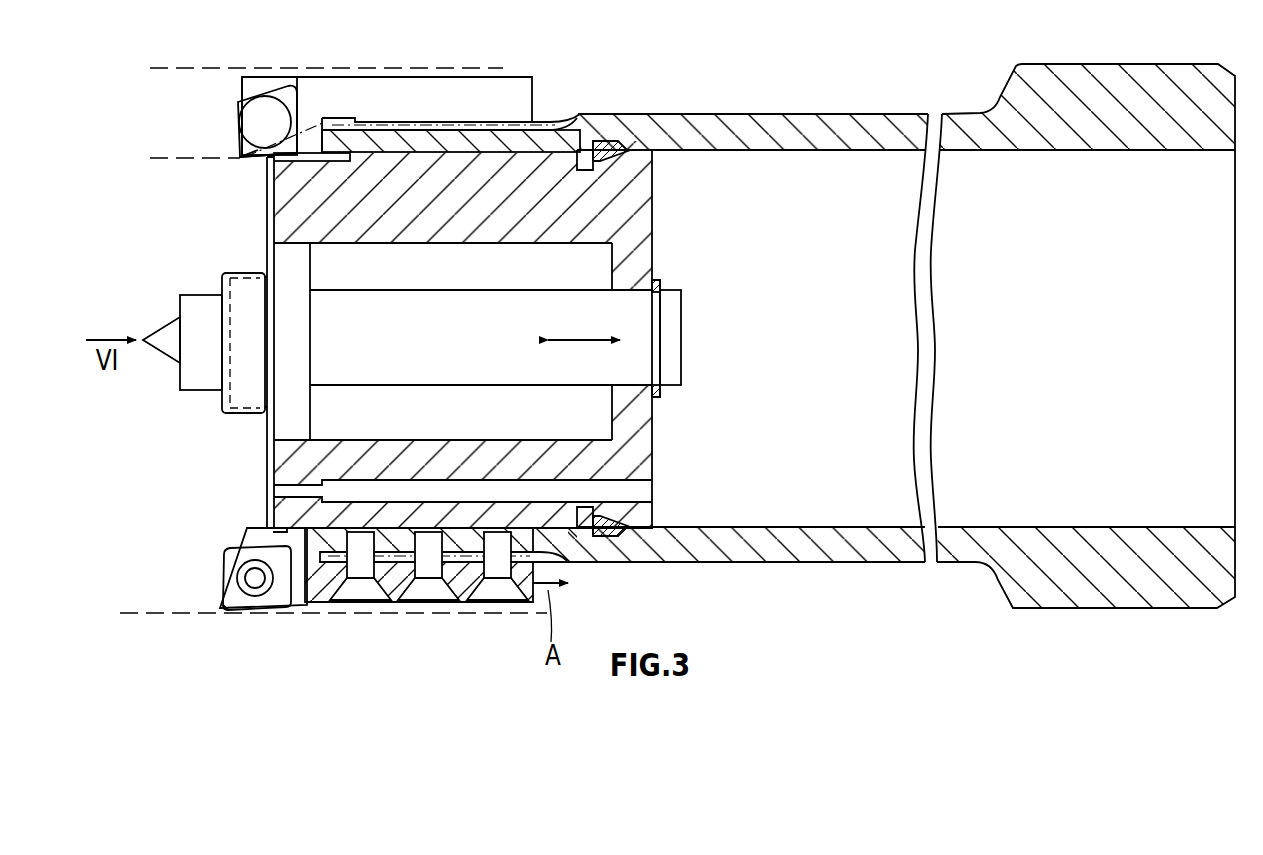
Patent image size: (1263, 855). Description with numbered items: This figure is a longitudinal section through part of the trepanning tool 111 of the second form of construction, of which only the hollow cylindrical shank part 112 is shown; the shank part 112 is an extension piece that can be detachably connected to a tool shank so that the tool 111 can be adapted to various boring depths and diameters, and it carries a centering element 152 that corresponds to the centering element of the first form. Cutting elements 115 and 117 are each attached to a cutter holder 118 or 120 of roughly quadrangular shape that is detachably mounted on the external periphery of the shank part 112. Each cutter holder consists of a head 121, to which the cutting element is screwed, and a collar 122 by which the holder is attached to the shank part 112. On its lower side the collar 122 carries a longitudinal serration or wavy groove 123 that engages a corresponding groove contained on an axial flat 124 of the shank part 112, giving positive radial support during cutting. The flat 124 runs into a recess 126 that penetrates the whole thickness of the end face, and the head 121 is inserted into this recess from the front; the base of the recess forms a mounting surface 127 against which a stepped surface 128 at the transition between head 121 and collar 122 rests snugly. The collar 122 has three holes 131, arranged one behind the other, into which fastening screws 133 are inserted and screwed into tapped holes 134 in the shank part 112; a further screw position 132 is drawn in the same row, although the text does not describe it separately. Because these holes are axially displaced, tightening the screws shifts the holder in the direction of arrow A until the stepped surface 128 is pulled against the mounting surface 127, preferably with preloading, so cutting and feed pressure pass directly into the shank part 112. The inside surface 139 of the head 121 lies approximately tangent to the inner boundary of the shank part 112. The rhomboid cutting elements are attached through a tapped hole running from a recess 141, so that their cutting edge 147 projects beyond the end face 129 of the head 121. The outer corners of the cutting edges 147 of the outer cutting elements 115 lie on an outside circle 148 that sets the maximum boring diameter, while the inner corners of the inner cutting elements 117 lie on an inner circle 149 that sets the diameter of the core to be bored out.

The trepanning tool 111 is at (979, 610).
The shank part 112 is at (719, 548).
The cutting element 115 is at (219, 603).
The cutting element 117 is at (238, 136).
The cutter holder 118 is at (318, 597).
The cutter holder 120 is at (333, 76).
The head 121 is at (262, 90).
The collar 122 is at (465, 95).
The wavy groove 123 is at (396, 117).
The flat 124 is at (467, 137).
The recess 126 is at (333, 157).
The mounting surface 127 is at (320, 151).
The stepped surface 128 is at (321, 527).
The end face 129 is at (241, 88).
The hole 131 is at (424, 581).
The second screw 132 is at (454, 600).
The fastening screw 133 is at (521, 602).
The tapped hole 134 is at (500, 537).
The inside surface 139 is at (262, 157).
The recess 141 is at (283, 95).
The cutting edge 147 is at (232, 153).
The outside circle 148 is at (158, 615).
The inner circle 149 is at (152, 161).
The centering element 152 is at (541, 208).